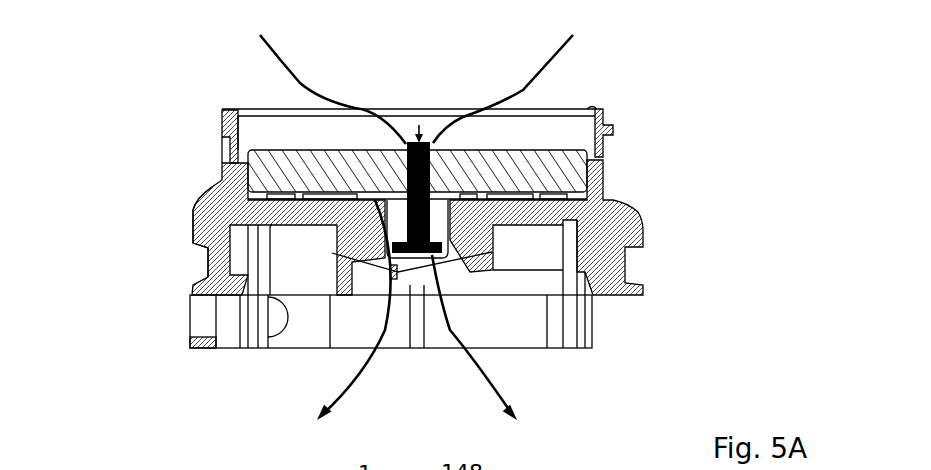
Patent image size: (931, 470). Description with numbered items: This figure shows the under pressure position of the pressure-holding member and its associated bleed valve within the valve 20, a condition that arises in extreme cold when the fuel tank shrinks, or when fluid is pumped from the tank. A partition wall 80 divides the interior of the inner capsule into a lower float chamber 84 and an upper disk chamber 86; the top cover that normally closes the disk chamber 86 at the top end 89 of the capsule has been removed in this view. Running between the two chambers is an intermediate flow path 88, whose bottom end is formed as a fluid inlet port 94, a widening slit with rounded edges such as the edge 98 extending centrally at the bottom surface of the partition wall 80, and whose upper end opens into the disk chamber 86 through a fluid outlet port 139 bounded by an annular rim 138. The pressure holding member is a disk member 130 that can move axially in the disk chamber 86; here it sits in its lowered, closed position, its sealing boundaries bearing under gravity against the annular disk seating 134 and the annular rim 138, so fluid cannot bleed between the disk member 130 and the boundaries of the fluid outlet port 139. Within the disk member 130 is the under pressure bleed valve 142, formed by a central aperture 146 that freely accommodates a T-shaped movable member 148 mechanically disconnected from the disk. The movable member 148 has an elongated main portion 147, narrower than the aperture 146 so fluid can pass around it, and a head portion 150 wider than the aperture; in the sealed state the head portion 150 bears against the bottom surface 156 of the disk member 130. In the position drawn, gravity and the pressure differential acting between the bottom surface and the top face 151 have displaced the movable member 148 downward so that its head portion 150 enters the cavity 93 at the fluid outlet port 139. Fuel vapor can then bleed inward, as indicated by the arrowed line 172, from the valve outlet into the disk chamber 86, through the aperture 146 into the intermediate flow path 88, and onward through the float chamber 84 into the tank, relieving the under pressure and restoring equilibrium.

The valve 20 is at (147, 368).
The partition wall 80 is at (493, 330).
The float chamber 84 is at (450, 330).
The disk chamber 86 is at (257, 133).
The intermediate flow path 88 is at (423, 343).
The top end 89 is at (222, 132).
The cavity 93 is at (228, 167).
The fluid inlet port 94 is at (363, 330).
The rounded edge 98 is at (613, 158).
The disk member 130 is at (284, 107).
The annular disk seating 134 is at (220, 177).
The annular rim 138 is at (262, 190).
The fluid outlet port 139 is at (443, 205).
The under pressure bleed valve 142 is at (421, 127).
The aperture 146 is at (431, 130).
The main portion 147 is at (430, 137).
The movable member 148 is at (196, 213).
The head portion 150 is at (392, 248).
The top face 151 is at (404, 125).
The bottom surface 156 is at (612, 198).
The arrowed line 172 is at (285, 53).